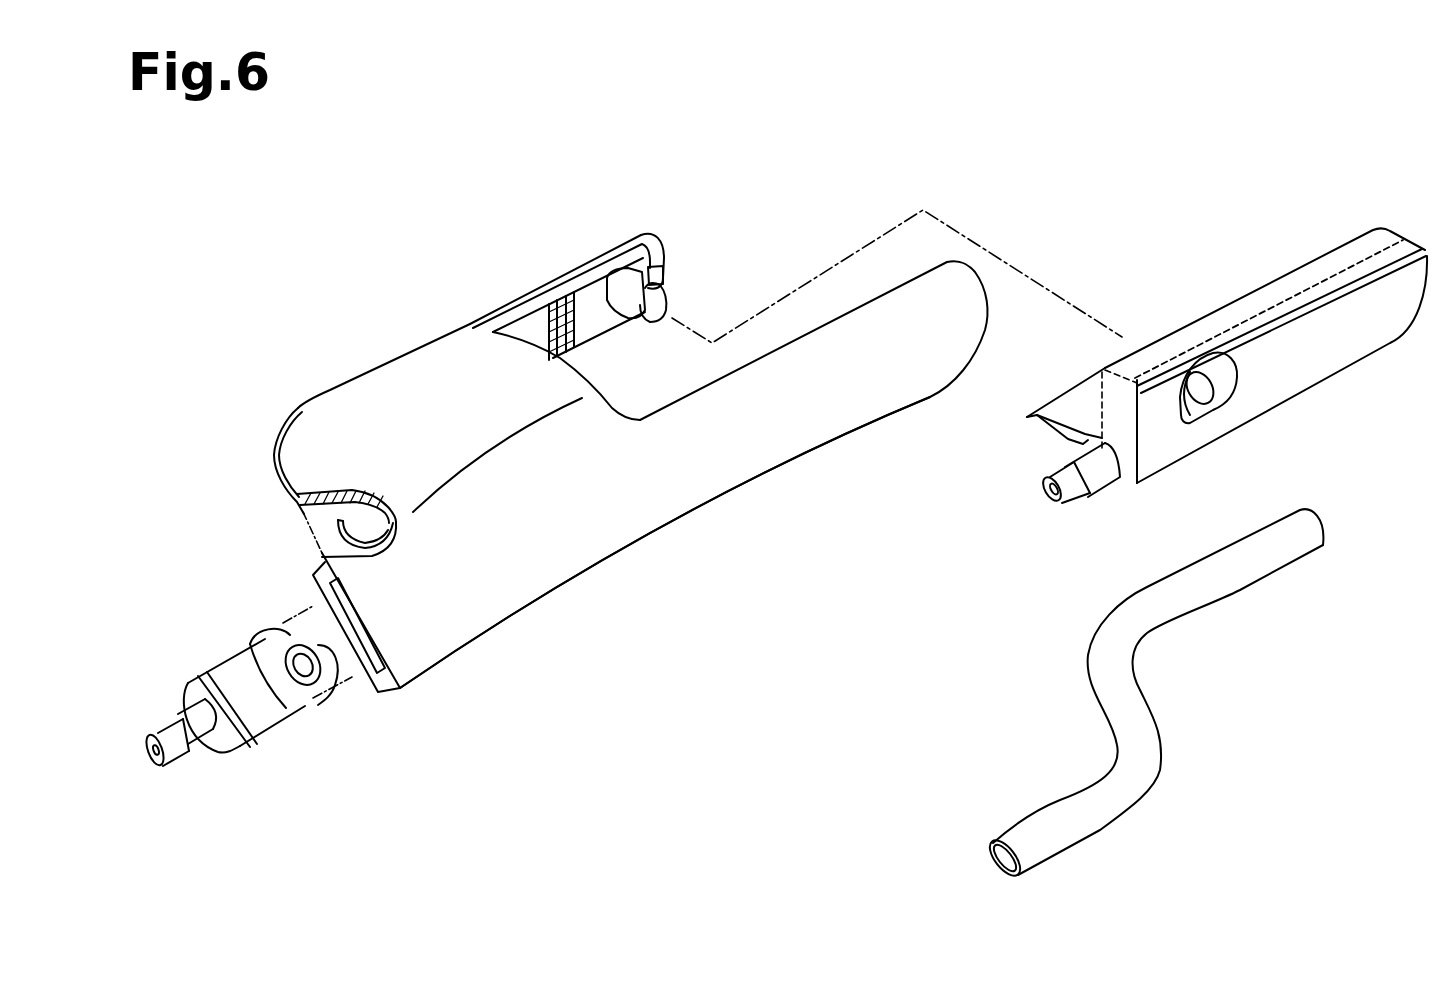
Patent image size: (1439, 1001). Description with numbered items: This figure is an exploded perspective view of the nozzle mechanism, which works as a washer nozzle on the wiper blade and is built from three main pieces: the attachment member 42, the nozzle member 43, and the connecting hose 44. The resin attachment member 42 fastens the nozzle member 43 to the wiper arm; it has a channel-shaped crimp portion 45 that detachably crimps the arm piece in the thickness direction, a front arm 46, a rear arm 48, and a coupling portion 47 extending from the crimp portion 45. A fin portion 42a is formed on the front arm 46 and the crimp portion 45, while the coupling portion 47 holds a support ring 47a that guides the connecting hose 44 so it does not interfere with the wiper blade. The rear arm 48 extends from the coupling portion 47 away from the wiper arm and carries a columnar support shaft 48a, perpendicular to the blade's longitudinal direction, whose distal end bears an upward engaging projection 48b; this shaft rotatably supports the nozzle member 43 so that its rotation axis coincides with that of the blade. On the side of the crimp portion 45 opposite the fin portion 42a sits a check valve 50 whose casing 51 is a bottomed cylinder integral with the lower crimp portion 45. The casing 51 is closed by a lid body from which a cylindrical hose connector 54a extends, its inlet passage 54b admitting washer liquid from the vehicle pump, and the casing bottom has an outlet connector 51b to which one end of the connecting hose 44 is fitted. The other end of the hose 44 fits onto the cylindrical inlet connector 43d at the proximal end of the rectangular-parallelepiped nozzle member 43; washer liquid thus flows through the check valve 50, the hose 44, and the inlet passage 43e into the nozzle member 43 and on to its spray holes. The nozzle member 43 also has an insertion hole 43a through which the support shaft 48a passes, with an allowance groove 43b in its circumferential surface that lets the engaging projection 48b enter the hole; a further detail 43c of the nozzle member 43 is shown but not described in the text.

The attachment member 42 is at (281, 433).
The fin portion 42a is at (603, 558).
The nozzle member 43 is at (1263, 288).
The insertion hole 43a is at (1206, 384).
The allowance groove 43b is at (1194, 406).
The hidden edge / rib of attachment block 43c is at (1313, 288).
The inlet connector 43d is at (1104, 478).
The inlet passage 43e is at (1042, 498).
The connecting hose 44 is at (1150, 706).
The crimp portion 45 is at (372, 694).
The front arm 46 is at (793, 456).
The coupling portion 47 is at (300, 470).
The support ring 47a is at (343, 533).
The rear arm 48 is at (534, 290).
The support shaft 48a is at (655, 306).
The engaging projection 48b is at (662, 278).
The check valve 50 is at (270, 724).
The casing 51 is at (195, 679).
The outlet connector 51b is at (285, 632).
The hose connector 54a is at (188, 722).
The inlet passage 54b is at (152, 770).